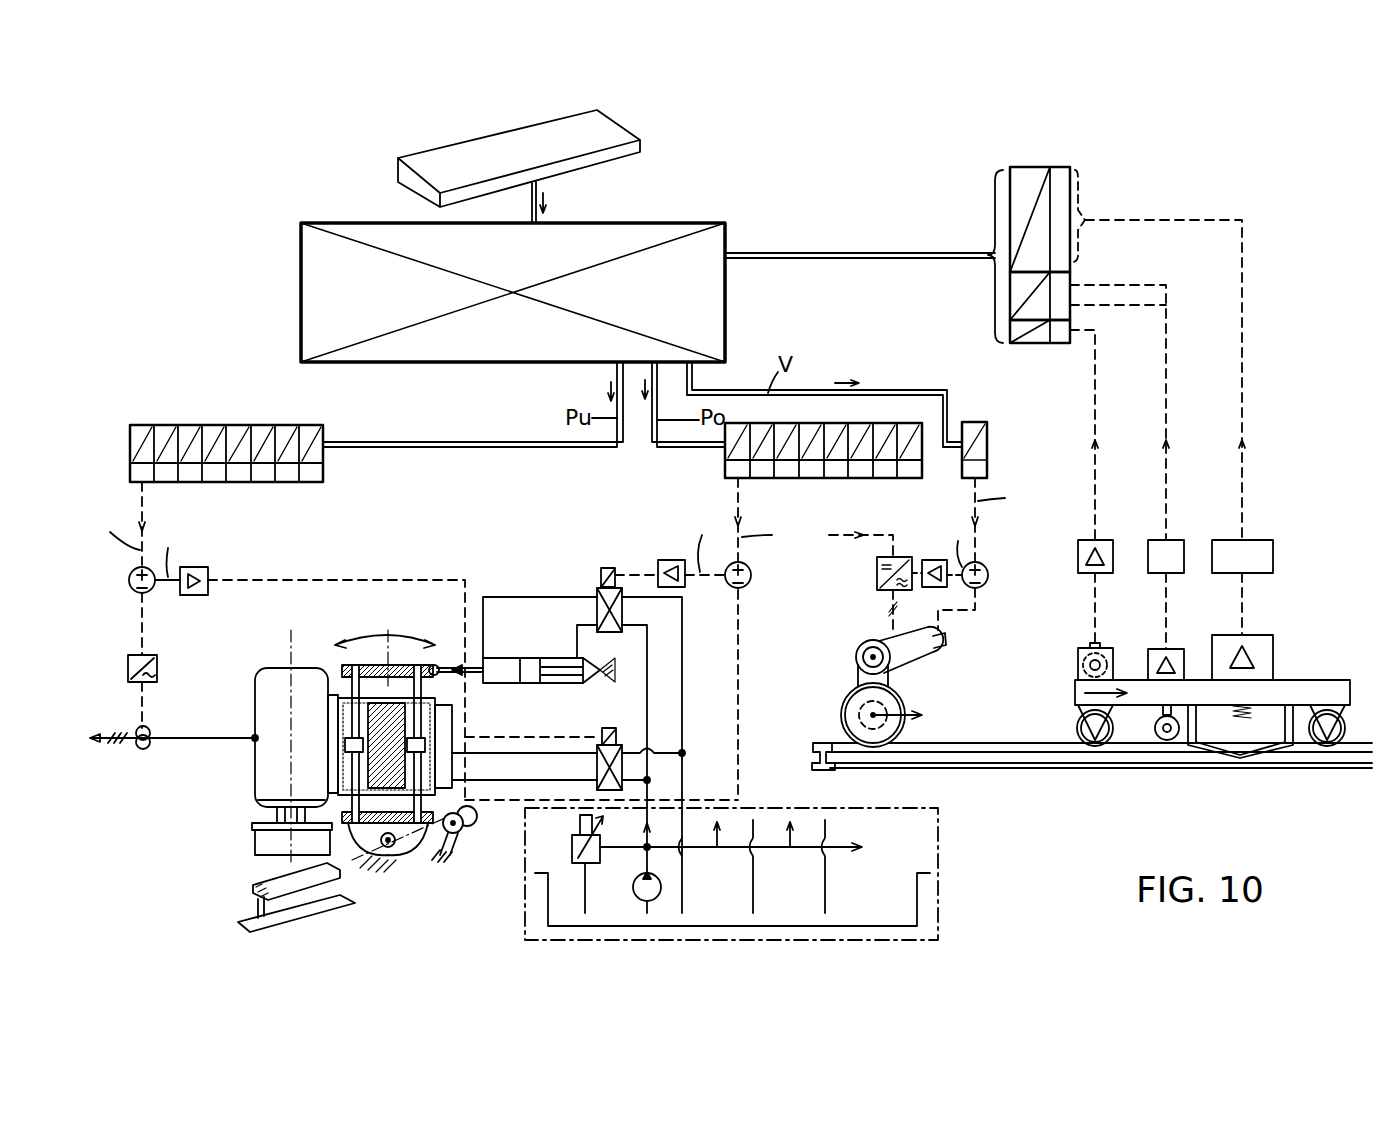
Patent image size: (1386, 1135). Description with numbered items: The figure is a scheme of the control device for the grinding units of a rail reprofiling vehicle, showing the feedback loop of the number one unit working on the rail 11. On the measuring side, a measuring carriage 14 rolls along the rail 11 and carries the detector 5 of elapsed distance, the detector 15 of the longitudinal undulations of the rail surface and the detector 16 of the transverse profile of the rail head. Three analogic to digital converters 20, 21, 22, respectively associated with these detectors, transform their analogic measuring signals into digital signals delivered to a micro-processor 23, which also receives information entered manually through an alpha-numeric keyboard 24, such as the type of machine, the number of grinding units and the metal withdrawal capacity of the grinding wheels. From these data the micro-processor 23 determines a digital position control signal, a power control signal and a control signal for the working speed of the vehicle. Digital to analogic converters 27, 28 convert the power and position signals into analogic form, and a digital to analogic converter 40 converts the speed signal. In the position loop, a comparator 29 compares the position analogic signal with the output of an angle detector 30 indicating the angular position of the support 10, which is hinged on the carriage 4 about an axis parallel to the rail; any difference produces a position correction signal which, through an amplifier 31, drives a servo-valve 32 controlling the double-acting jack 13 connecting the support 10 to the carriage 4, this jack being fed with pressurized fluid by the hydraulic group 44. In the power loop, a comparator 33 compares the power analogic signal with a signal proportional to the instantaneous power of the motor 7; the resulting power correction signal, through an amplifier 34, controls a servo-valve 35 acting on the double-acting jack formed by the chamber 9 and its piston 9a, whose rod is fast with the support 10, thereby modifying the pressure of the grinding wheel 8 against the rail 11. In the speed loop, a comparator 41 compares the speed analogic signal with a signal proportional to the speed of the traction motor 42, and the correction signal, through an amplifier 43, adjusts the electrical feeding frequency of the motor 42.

The carriage 4 is at (400, 857).
The measuring device 5 is at (1096, 735).
The motor 7 is at (276, 684).
The grinding wheel 8 is at (268, 843).
The chamber 9 is at (431, 776).
The piston 9a is at (430, 742).
The support 10 is at (395, 672).
The rail 11 is at (255, 906).
The double-acting jack 13 is at (505, 658).
The measuring carriage 14 is at (1285, 690).
The detector of longitudinal undulations 15 is at (1168, 740).
The detector of transverse profile 16 is at (1245, 730).
The analogic to digital converter 20 is at (1027, 343).
The analogic to digital converter 21 is at (1060, 285).
The analogic to digital converter 22 is at (1060, 192).
The micro-processor 23 is at (513, 292).
The alpha-numeric keyboard 24 is at (519, 166).
The digital to analogic converter 27 is at (832, 470).
The digital to analogic converter 28 is at (212, 432).
The comparator 29 is at (751, 583).
The angle detector 30 is at (470, 830).
The amplifier 31 is at (688, 588).
The servo-valve 32 is at (601, 577).
The comparator 33 is at (131, 590).
The amplifier 34 is at (196, 596).
The servo-valve 35 is at (625, 737).
The digital to analogic converter 40 is at (987, 441).
The comparator 41 is at (988, 572).
The traction motor 42 is at (908, 655).
The amplifier 43 is at (928, 560).
The hydraulic group 44 is at (930, 832).